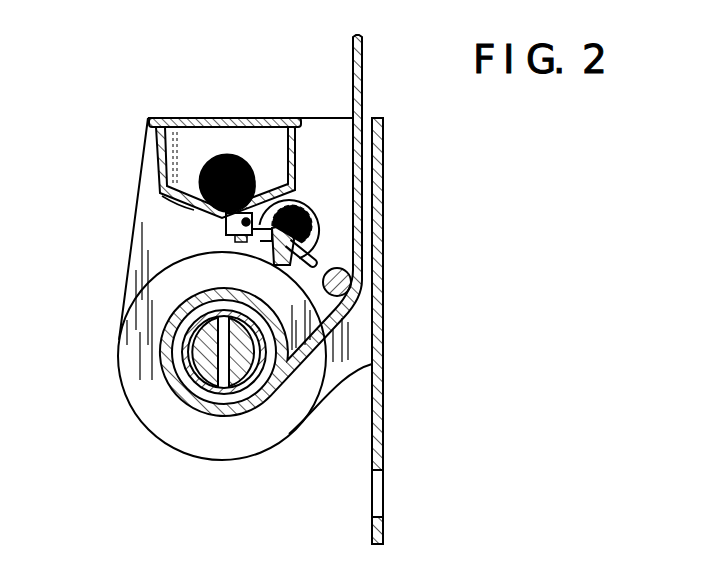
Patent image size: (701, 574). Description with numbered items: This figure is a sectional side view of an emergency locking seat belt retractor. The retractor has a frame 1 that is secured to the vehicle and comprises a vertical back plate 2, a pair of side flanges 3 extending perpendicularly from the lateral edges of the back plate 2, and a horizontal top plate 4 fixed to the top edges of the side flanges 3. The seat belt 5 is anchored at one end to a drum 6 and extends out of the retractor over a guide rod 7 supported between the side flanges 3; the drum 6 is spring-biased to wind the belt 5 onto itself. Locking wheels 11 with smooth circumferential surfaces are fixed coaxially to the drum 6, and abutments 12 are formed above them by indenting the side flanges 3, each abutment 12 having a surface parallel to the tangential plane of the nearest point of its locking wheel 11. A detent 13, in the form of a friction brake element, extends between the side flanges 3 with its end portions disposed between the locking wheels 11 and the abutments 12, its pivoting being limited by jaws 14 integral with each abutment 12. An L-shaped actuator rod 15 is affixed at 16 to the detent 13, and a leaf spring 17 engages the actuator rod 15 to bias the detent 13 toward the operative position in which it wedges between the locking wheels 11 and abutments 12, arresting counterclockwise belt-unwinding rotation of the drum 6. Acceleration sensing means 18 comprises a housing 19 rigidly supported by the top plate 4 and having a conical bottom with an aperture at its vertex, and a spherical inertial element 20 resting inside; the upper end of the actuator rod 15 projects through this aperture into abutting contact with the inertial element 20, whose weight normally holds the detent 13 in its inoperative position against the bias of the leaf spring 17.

The frame 1 is at (387, 119).
The back plate 2 is at (378, 437).
The side flanges 3 is at (353, 335).
The top plate 4 is at (228, 117).
The seat belt 5 is at (357, 82).
The drum 6 is at (207, 366).
The guide rod 7 is at (351, 284).
The locking wheels 11 is at (146, 312).
The abutments 12 is at (298, 217).
The detent 13 is at (280, 266).
The jaws 14 is at (297, 205).
The actuator rod 15 is at (224, 220).
The attachment point 16 is at (272, 246).
The leaf spring 17 is at (236, 233).
The acceleration sensing means 18 is at (158, 165).
The housing 19 is at (177, 201).
The inertial element 20 is at (238, 176).